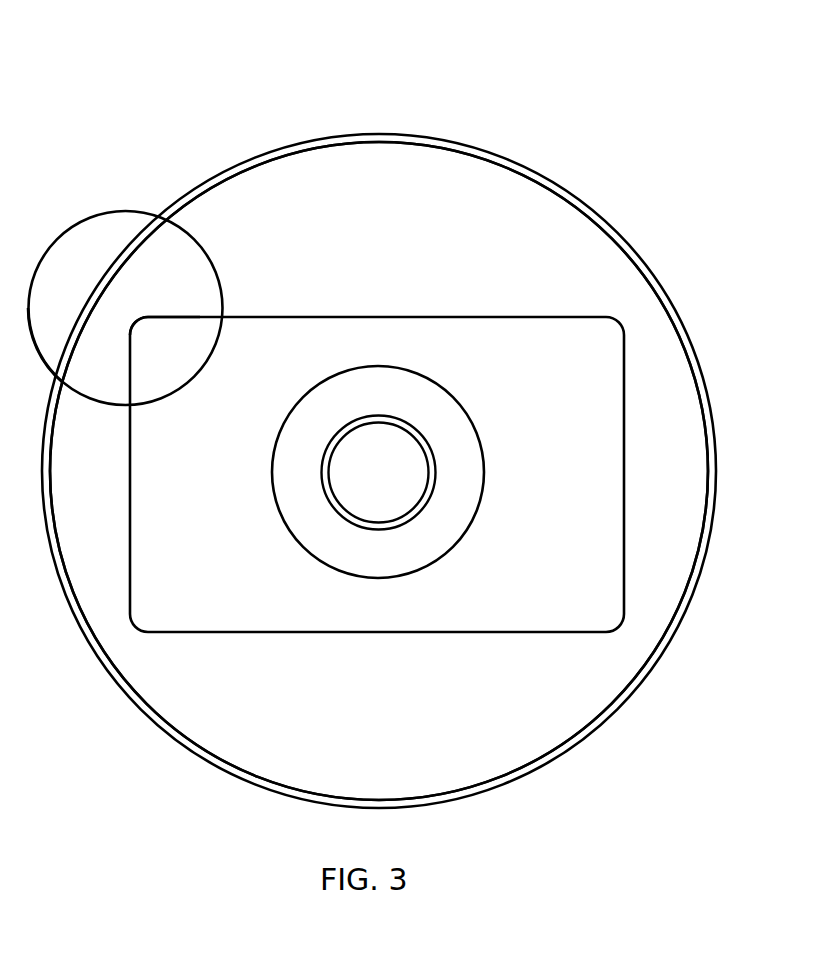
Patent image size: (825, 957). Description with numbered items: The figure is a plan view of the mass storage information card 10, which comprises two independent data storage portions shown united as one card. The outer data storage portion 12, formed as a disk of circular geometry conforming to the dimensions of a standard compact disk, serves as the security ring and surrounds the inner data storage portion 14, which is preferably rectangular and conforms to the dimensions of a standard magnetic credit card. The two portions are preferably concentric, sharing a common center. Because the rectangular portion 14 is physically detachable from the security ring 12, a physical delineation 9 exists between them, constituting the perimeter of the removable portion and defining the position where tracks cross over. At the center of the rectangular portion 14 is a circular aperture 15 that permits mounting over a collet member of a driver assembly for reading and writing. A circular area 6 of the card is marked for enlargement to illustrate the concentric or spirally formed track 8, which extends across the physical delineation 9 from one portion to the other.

The area 6 is at (67, 228).
The track 8 is at (35, 343).
The physical delineation 9 is at (162, 317).
The mass storage information card 10 is at (478, 143).
The data storage portion 12 is at (463, 248).
The data storage portion 14 is at (555, 587).
The circular aperture 15 is at (378, 472).